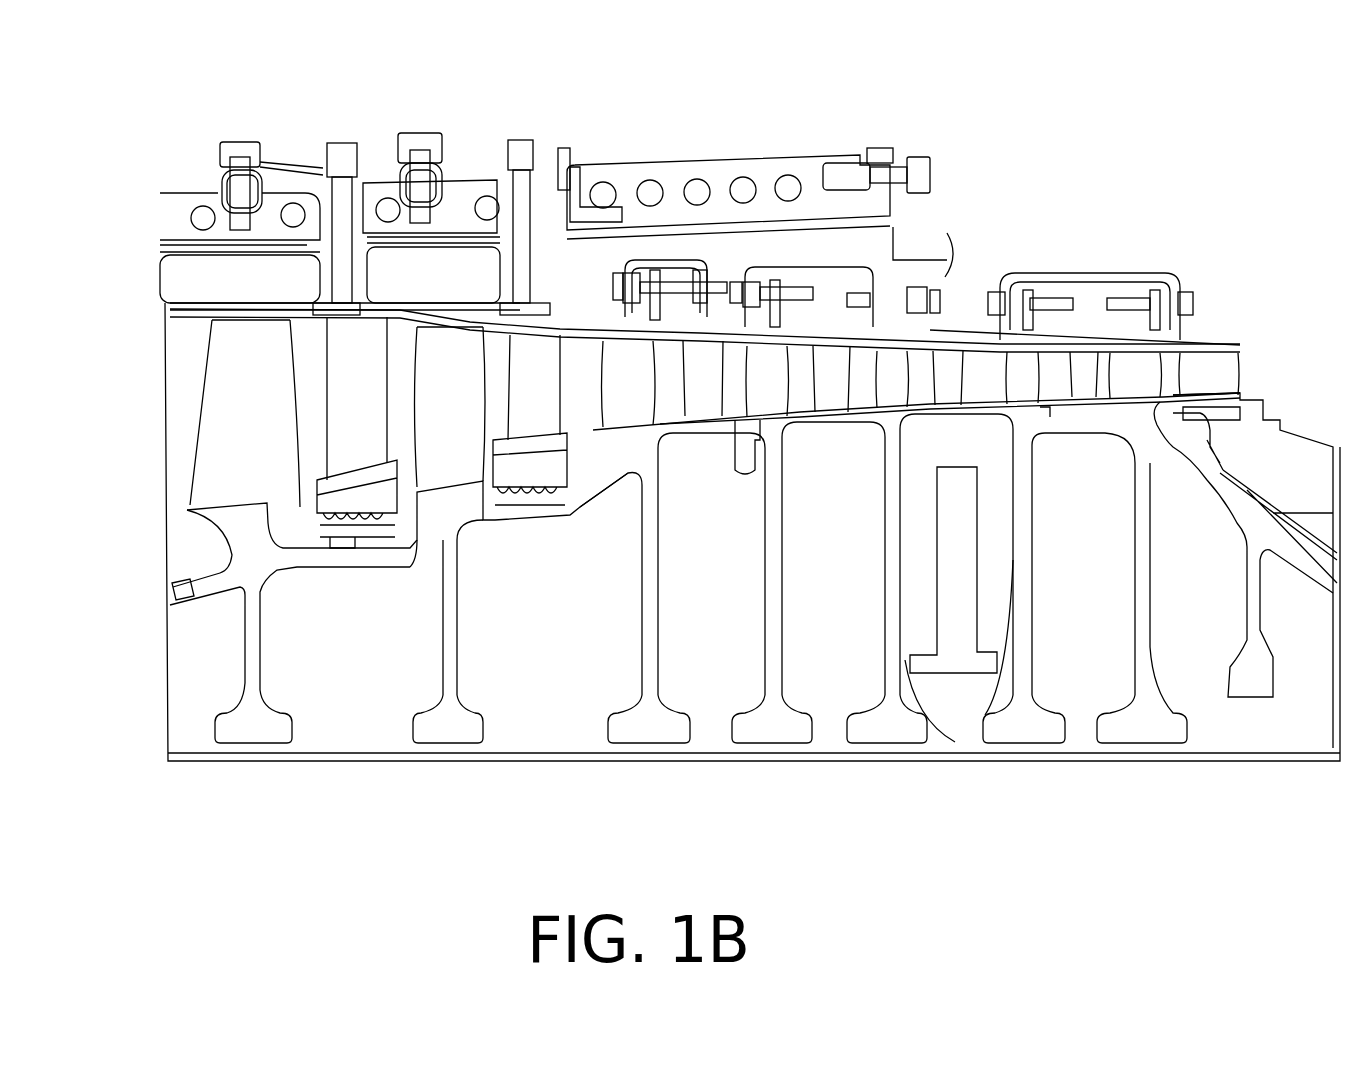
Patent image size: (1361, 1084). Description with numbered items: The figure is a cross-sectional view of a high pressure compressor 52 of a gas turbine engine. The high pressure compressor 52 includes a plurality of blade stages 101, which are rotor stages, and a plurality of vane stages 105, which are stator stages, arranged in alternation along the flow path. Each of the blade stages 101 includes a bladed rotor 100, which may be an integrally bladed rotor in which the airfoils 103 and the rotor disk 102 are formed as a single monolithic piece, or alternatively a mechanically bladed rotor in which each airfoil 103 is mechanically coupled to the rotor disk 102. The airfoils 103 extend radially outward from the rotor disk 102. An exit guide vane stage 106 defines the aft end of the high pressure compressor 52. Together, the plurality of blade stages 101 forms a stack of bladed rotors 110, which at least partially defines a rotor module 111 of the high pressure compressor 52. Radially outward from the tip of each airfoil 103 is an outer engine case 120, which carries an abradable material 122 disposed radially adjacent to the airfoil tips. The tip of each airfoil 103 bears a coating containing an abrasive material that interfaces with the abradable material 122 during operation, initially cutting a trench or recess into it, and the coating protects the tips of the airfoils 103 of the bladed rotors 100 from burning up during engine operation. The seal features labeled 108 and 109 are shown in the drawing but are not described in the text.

The high pressure compressor 52 is at (165, 156).
The bladed rotor 100 is at (213, 652).
The blade stages 101 is at (252, 772).
The rotor disk 102 is at (428, 728).
The airfoils 103 is at (208, 460).
The vane stages 105 is at (350, 352).
The exit guide vane stage 106 is at (1210, 372).
The seal 108 is at (347, 540).
The seal tooth 109 is at (322, 532).
The stack of bladed rotors 110 is at (1153, 687).
The rotor module 111 is at (204, 740).
The outer engine case 120 is at (171, 295).
The abradable material 122 is at (350, 355).